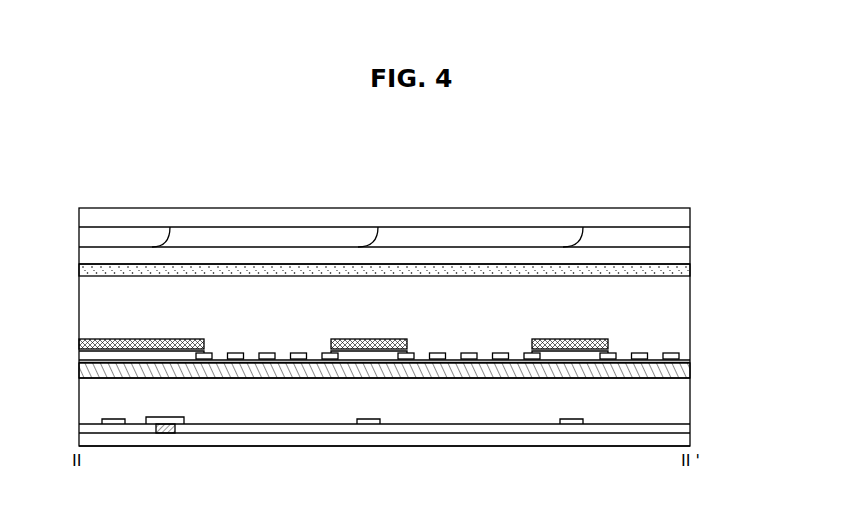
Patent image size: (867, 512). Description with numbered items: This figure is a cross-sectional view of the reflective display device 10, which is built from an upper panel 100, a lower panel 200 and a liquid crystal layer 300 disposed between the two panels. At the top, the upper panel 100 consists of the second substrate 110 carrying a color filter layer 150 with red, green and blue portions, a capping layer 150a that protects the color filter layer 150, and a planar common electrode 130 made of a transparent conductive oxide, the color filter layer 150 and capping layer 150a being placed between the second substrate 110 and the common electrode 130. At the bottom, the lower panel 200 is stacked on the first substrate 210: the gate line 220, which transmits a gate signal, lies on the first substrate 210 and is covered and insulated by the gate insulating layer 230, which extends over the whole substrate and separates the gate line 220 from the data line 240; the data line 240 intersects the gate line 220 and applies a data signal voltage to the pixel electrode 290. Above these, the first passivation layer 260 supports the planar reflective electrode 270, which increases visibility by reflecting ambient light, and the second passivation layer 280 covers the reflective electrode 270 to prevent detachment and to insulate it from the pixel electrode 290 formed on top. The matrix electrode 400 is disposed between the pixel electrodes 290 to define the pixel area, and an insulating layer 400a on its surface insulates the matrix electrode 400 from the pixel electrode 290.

The reflective display device 10 is at (452, 188).
The upper panel 100 is at (758, 207).
The second substrate 110 is at (675, 218).
The color filter layer 150 is at (677, 236).
The capping layer 150a is at (678, 257).
The common electrode 130 is at (678, 270).
The liquid crystal layer 300 is at (672, 298).
The matrix electrode 400 is at (79, 341).
The insulating layer 400a is at (83, 355).
The pixel electrode 290 is at (670, 348).
The second passivation layer 280 is at (682, 362).
The reflective electrode 270 is at (682, 370).
The first passivation layer 260 is at (680, 399).
The gate insulating layer 230 is at (682, 428).
The first substrate 210 is at (682, 440).
The gate line 220 is at (163, 434).
The data line 240 is at (368, 426).
The lower panel 200 is at (758, 337).